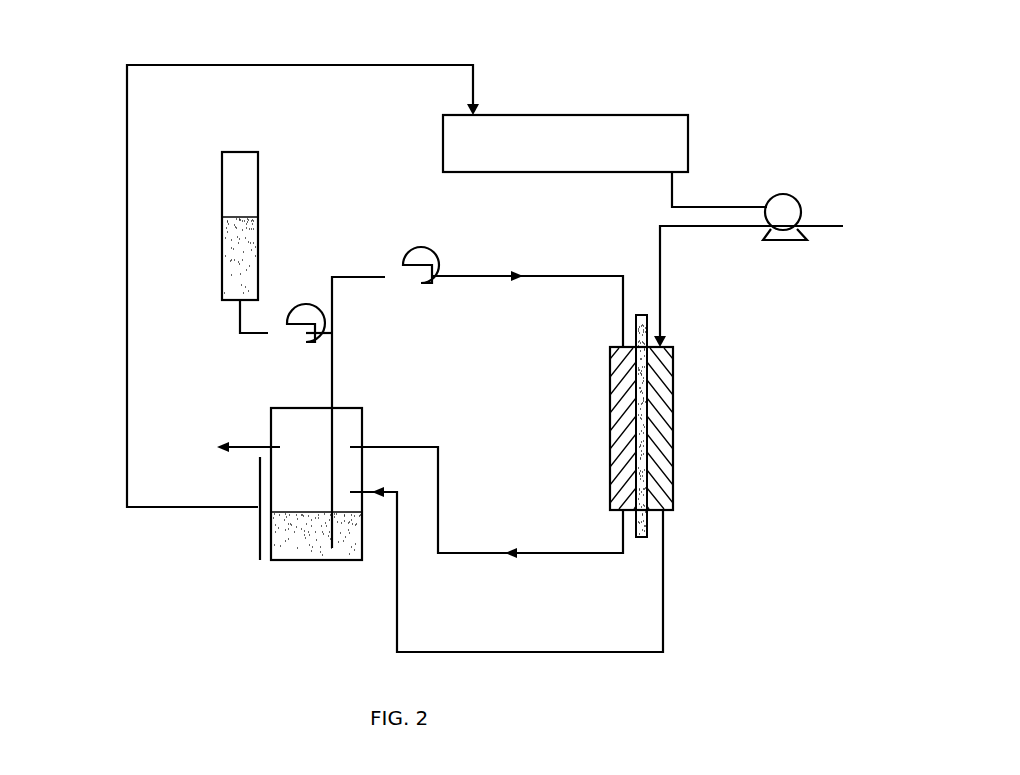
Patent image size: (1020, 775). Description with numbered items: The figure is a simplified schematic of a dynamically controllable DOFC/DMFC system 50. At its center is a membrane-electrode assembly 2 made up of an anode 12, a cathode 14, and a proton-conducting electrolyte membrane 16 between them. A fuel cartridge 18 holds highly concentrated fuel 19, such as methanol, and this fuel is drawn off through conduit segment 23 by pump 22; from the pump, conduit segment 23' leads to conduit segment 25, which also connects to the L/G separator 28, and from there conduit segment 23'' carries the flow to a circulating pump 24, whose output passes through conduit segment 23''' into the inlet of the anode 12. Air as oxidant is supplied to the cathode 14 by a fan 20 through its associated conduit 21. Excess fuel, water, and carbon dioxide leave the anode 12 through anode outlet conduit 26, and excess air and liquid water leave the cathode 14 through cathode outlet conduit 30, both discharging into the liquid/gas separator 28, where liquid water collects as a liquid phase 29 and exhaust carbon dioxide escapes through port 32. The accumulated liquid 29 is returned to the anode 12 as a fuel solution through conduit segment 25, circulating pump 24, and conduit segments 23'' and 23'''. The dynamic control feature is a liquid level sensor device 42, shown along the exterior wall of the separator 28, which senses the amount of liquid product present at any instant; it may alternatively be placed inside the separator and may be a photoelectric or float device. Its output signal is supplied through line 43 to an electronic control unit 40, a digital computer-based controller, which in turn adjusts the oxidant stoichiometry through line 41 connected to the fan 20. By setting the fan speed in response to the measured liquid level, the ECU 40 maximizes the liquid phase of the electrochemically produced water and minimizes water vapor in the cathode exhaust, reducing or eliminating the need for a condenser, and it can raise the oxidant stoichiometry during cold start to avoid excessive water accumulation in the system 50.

The membrane-electrode assembly 2 is at (653, 456).
The anode 12 is at (607, 443).
The cathode 14 is at (680, 437).
The proton-conducting electrolyte membrane 16 is at (641, 544).
The fuel cartridge 18 is at (237, 213).
The highly concentrated fuel 19 is at (215, 247).
The fan 20 is at (793, 192).
The conduit 21 is at (713, 235).
The pump 22 is at (265, 355).
The conduit segment 23 is at (222, 302).
The conduit segment 23' is at (307, 307).
The conduit segment 23'' is at (360, 273).
The conduit segment 23''' is at (527, 309).
The circulating pump 24 is at (417, 262).
The conduit segment 25 is at (338, 377).
The anode outlet conduit 26 is at (570, 557).
The liquid/gas separator 28 is at (348, 501).
The liquid phase 29 is at (304, 550).
The cathode outlet conduit 30 is at (680, 525).
The port 32 is at (243, 452).
The electronic control unit 40 is at (693, 142).
The line 41 is at (712, 195).
The liquid level sensor device 42 is at (255, 527).
The line 43 is at (122, 385).
The DOFC/DMFC system 50 is at (95, 283).